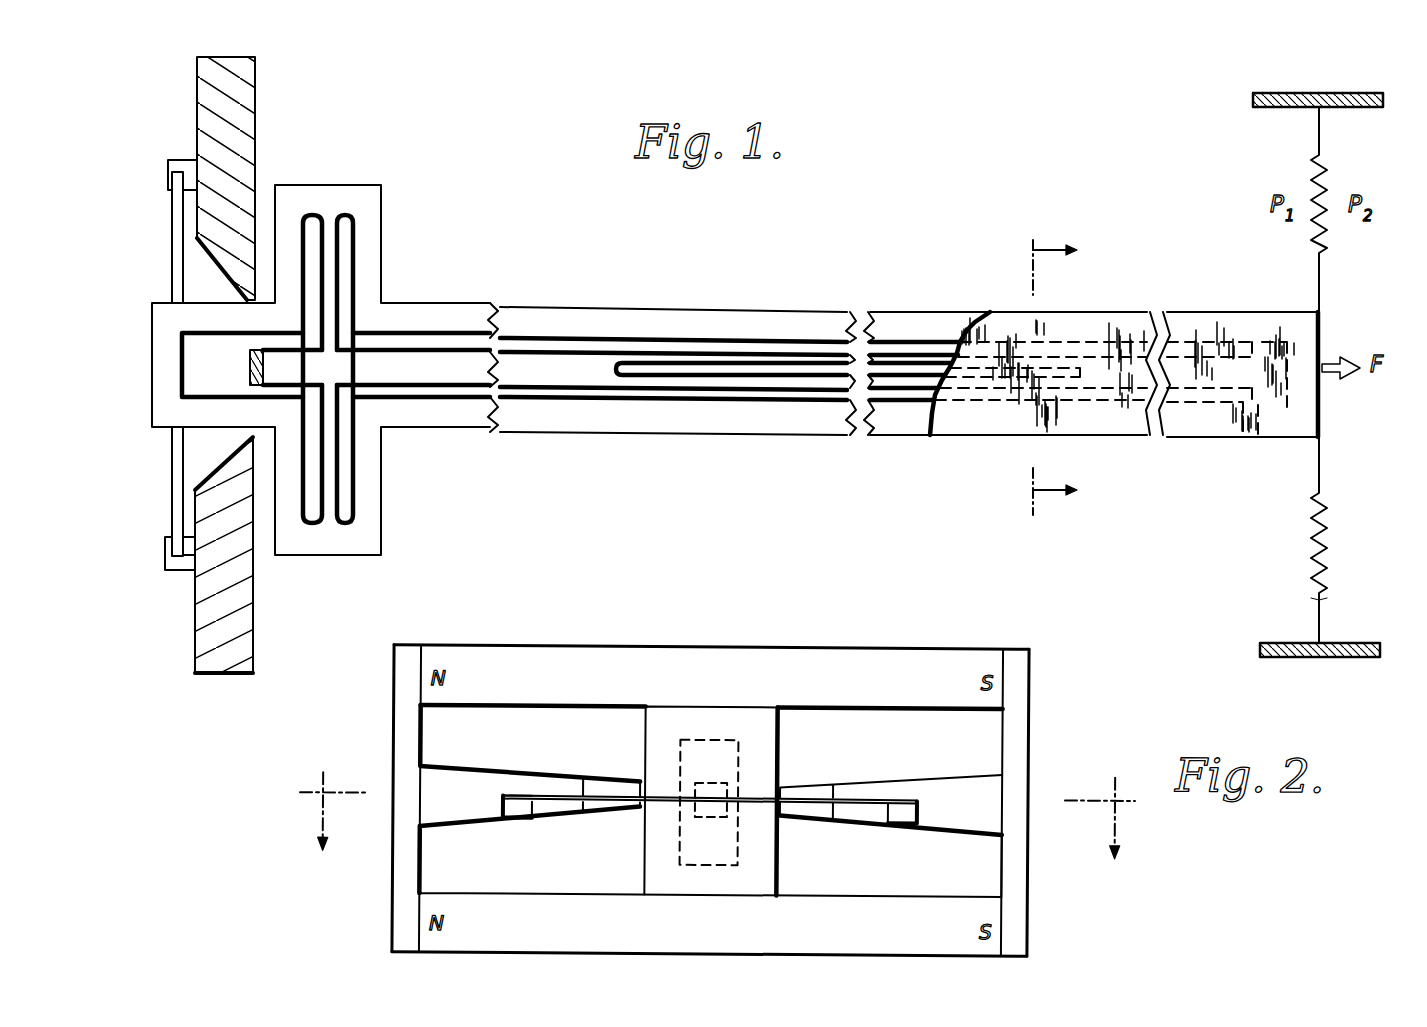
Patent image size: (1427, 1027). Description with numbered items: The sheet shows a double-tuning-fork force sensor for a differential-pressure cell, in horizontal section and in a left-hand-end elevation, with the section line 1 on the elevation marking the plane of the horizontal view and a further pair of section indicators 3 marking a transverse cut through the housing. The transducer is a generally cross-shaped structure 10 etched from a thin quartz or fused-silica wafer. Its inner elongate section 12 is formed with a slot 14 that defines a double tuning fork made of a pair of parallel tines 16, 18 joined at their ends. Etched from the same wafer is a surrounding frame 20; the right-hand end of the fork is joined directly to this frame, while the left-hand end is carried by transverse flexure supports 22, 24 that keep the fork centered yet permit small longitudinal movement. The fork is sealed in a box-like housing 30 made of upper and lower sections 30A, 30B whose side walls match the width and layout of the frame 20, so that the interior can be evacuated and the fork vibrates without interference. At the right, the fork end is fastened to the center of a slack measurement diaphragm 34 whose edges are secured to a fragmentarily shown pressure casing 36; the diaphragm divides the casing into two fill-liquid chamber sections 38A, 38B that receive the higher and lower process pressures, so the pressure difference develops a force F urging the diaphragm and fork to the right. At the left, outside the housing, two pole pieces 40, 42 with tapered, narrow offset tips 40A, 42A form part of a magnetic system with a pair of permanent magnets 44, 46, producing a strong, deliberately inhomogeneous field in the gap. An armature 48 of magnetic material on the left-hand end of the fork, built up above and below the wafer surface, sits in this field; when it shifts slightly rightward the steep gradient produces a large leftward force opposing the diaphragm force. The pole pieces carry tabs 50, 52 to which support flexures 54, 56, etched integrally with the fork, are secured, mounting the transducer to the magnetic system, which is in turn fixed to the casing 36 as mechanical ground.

In FIG. 1, the cross-shaped structure 10 is at (458, 340).
In FIG. 1, the inner elongate section (DTF) 12 is at (595, 368).
In FIG. 1, the slot 14 is at (768, 366).
In FIG. 1, the tine 16 is at (907, 362).
In FIG. 1, the tine 18 is at (913, 382).
In FIG. 1, the surrounding frame 20 is at (375, 205).
In FIG. 1, the flexure support 22 is at (333, 283).
In FIG. 1, the flexure support 24 is at (330, 505).
In FIG. 1, the housing 30 is at (1134, 300).
In FIG. 2, the housing 30 is at (787, 851).
In FIG. 1, the upper housing section 30A is at (1010, 422).
In FIG. 2, the upper housing section 30A is at (658, 732).
In FIG. 1, the lower housing section 30B is at (655, 425).
In FIG. 2, the lower housing section 30B is at (658, 876).
In FIG. 1, the pressure-responsive element (measurement diaphragm) 34 is at (1322, 531).
In FIG. 1, the pressure casing 36 is at (1350, 92).
In FIG. 1, the chamber section 38A is at (1279, 605).
In FIG. 1, the chamber section 38B is at (1360, 605).
In FIG. 1, the pole piece 40 is at (252, 105).
In FIG. 2, the pole piece 40 is at (445, 780).
In FIG. 1, the offset tip 40A is at (240, 294).
In FIG. 1, the pole piece 42 is at (237, 637).
In FIG. 2, the pole piece 42 is at (963, 778).
In FIG. 1, the offset tip 42A is at (240, 440).
In FIG. 2, the permanent magnet 44 is at (705, 662).
In FIG. 2, the permanent magnet 46 is at (805, 940).
In FIG. 1, the armature 48 is at (250, 366).
In FIG. 2, the armature 48 is at (713, 782).
In FIG. 1, the tab 50 is at (178, 162).
In FIG. 2, the tab 50 is at (522, 824).
In FIG. 1, the tab 52 is at (176, 572).
In FIG. 2, the tab 52 is at (908, 818).
In FIG. 1, the support flexure 54 is at (177, 221).
In FIG. 2, the support flexure 54 is at (552, 799).
In FIG. 1, the support flexure 56 is at (172, 465).
In FIG. 2, the support flexure 56 is at (862, 800).
In FIG. 2, the section line 1— 1 is at (721, 826).
In FIG. 1, the section line 3- 3 is at (1067, 373).